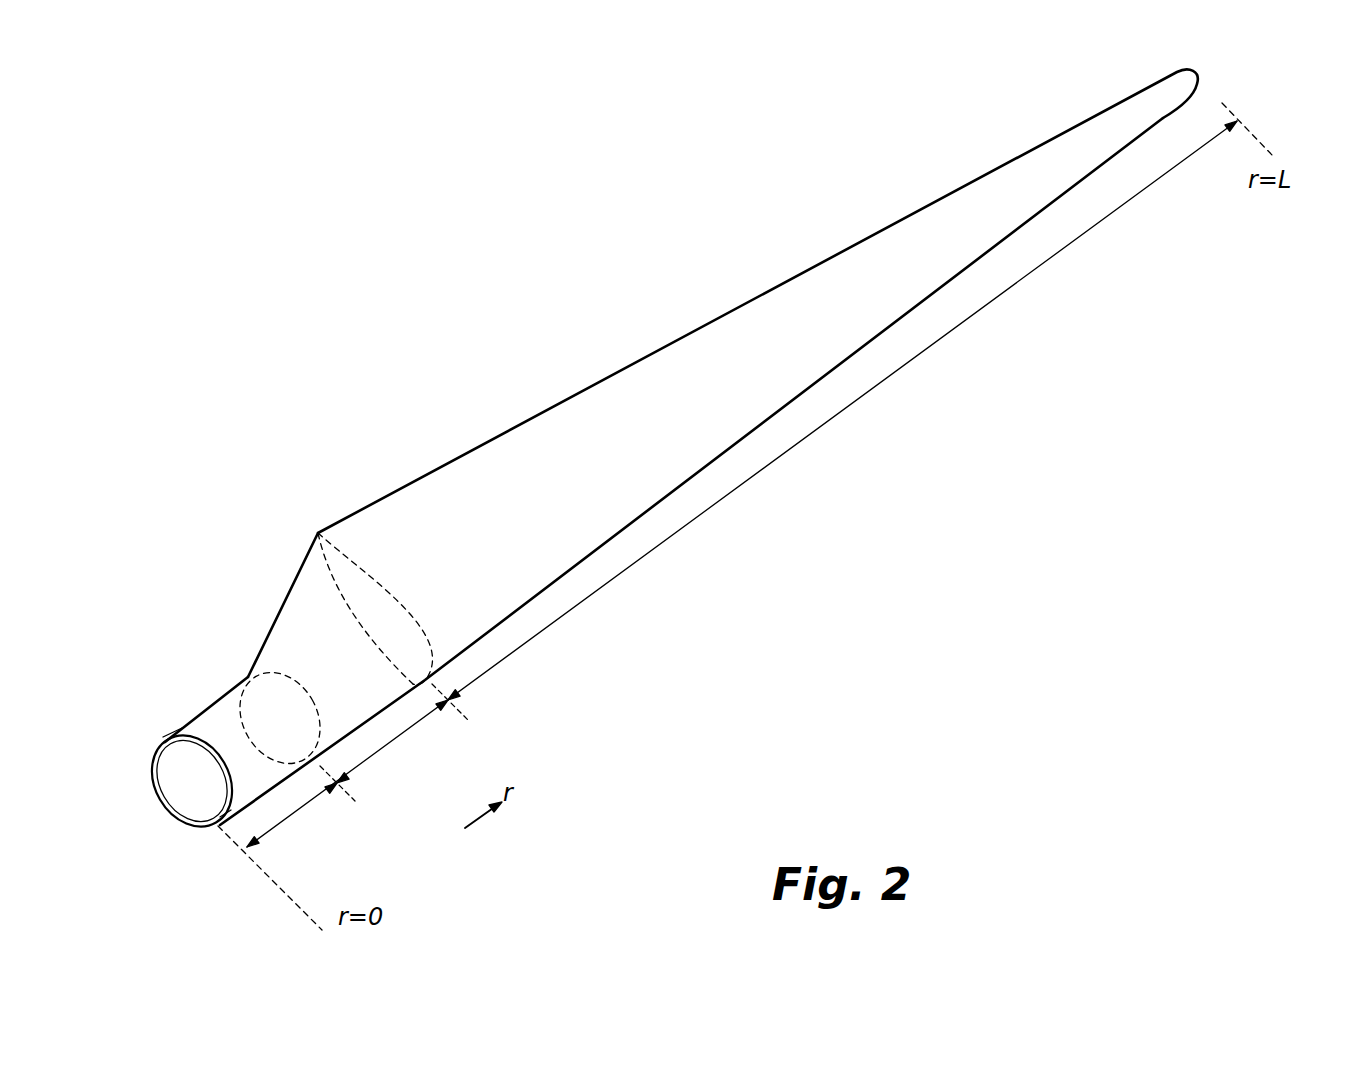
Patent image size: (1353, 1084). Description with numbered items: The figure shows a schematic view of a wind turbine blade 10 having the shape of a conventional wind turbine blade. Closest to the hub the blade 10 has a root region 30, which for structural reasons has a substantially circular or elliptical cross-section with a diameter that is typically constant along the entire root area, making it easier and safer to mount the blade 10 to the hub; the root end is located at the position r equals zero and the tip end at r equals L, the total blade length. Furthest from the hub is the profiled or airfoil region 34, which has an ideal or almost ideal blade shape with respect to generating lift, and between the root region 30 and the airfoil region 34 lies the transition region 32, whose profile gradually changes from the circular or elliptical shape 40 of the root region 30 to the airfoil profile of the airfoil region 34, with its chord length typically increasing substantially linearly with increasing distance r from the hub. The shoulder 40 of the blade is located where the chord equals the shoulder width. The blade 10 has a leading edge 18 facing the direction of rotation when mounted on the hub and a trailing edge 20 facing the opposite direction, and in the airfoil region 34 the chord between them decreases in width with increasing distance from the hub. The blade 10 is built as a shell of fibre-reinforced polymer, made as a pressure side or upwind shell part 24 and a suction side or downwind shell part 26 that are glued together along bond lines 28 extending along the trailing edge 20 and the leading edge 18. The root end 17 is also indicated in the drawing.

The wind turbine blade 10 is at (494, 313).
The root end 17 is at (182, 765).
The leading edge 18 is at (880, 333).
The trailing edge 20 is at (742, 302).
The pressure side or upwind shell part 24 is at (190, 720).
The suction side or downwind shell part 26 is at (192, 822).
The bond lines 28 is at (180, 730).
The root region 30 is at (295, 813).
The transition region 32 is at (397, 740).
The airfoil region 34 is at (765, 470).
The shoulder 40 is at (318, 533).